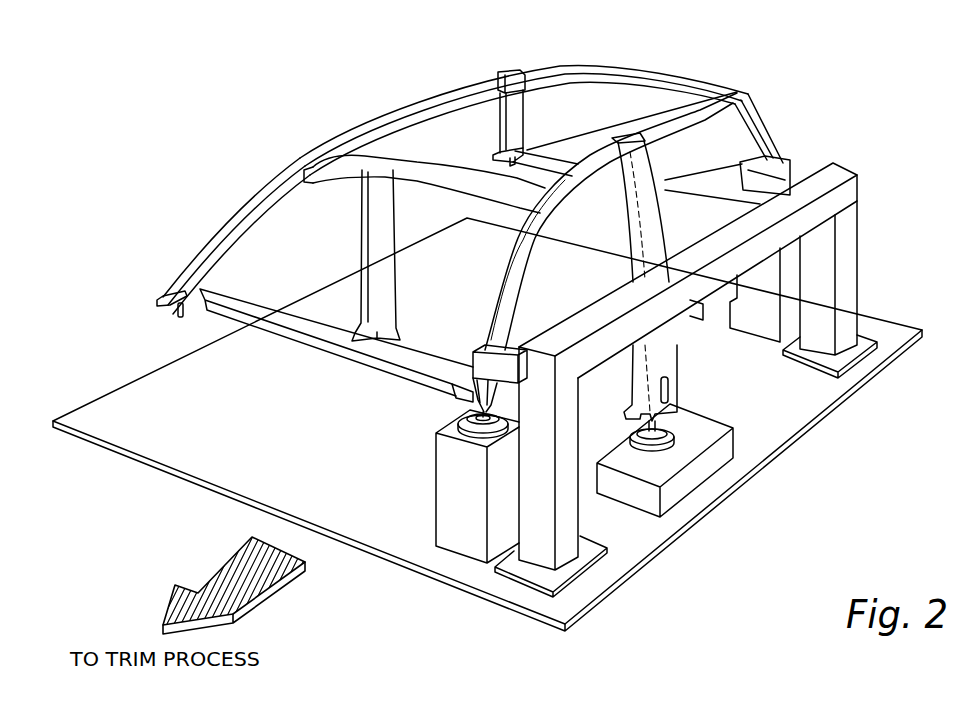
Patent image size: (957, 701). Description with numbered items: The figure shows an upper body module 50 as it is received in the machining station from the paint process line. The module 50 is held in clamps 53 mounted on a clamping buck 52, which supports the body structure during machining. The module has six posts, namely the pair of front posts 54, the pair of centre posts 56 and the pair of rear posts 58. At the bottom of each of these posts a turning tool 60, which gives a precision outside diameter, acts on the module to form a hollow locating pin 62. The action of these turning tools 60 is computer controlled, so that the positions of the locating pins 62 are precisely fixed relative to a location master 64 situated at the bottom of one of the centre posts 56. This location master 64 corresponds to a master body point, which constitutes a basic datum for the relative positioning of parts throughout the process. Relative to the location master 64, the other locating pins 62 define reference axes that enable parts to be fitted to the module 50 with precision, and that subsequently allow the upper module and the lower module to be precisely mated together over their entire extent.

The upper body module 50 is at (473, 232).
The clamping buck 52 is at (860, 257).
The clamps 53 is at (483, 363).
The front posts 54 is at (212, 272).
The centre posts 56 is at (383, 240).
The rear posts 58 is at (521, 127).
The turning tool 60 is at (710, 463).
The hollow locating pin 62 is at (177, 318).
The location master 64 is at (673, 440).